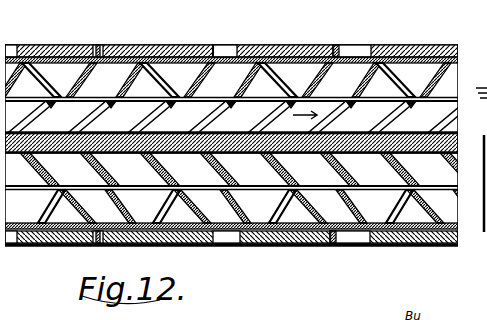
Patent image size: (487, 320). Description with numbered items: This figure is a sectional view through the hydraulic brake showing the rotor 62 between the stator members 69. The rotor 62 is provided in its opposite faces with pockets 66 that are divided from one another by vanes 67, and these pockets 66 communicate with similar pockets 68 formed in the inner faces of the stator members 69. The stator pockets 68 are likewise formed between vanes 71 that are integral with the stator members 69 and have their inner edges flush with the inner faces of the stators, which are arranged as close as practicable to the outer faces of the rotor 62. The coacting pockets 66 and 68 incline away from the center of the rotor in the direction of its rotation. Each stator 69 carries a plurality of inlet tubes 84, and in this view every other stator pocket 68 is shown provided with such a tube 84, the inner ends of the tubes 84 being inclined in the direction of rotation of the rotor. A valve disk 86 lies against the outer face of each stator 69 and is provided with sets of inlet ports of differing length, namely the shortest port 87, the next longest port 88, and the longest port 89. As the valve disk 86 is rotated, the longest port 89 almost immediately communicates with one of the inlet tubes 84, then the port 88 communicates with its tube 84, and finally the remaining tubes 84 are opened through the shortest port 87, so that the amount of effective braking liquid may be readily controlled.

The rotor 62 is at (360, 133).
The pockets 66 is at (248, 162).
The vanes 67 is at (213, 116).
The pockets 68 is at (317, 143).
The stator members 69 is at (360, 72).
The vanes 71 is at (123, 84).
The inlet tubes 84 is at (37, 82).
The valve disk 86 is at (289, 45).
The inlet port 87 is at (101, 46).
The inlet port 88 is at (226, 48).
The inlet port 89 is at (352, 50).